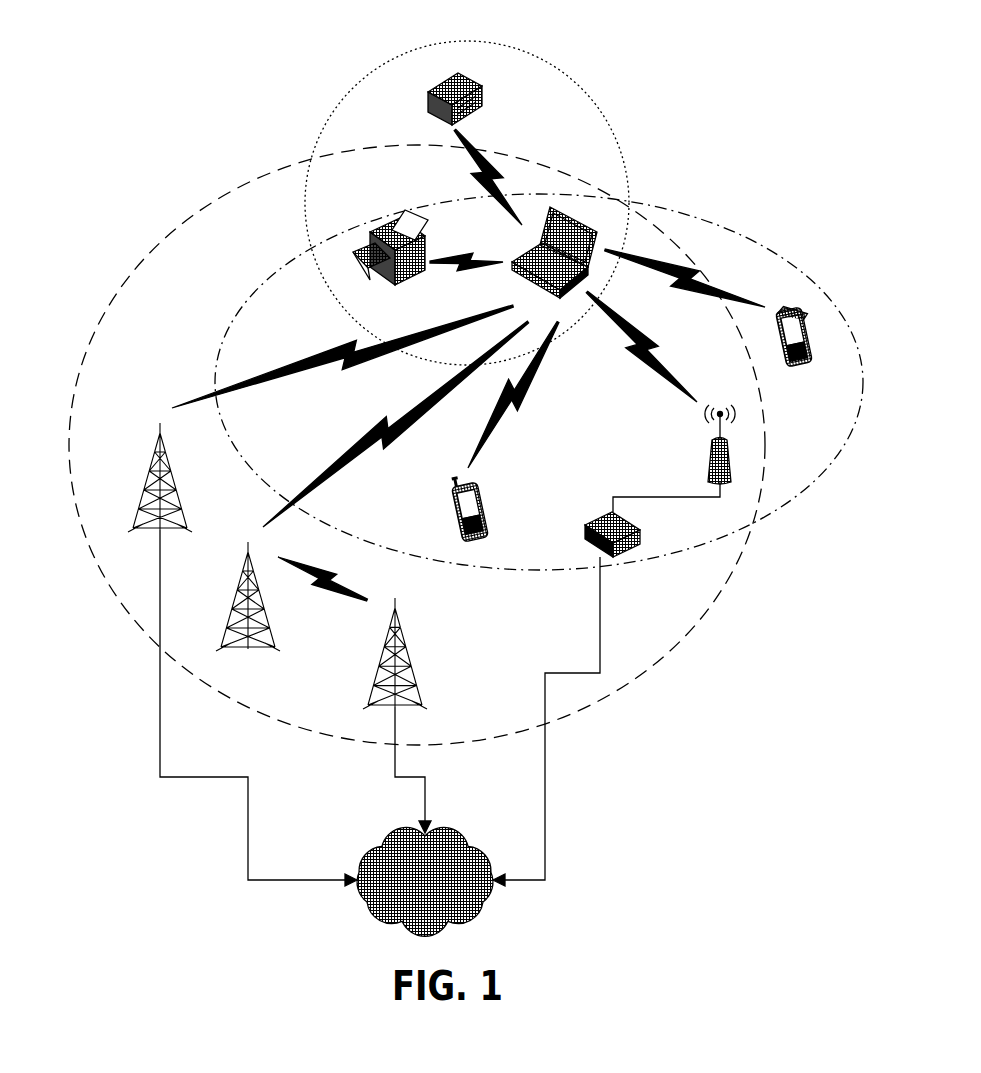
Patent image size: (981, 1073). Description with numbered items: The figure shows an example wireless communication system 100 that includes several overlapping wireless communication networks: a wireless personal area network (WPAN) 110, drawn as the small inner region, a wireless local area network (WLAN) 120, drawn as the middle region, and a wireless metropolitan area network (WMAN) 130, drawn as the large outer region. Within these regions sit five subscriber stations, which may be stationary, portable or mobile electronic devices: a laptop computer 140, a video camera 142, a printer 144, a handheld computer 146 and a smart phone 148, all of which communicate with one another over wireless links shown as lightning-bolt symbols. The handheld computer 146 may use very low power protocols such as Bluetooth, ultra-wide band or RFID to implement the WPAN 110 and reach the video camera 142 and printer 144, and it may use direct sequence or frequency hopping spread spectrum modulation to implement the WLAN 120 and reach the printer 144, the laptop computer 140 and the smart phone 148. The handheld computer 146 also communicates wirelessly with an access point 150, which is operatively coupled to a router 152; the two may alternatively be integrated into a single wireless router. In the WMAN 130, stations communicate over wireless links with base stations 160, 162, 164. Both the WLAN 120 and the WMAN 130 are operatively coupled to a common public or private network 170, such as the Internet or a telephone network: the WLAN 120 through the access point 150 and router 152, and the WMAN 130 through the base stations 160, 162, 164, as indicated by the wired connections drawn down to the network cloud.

The wireless communication system 100 is at (218, 82).
The wireless personal area network (WPAN) 110 is at (470, 42).
The wireless local area network (WLAN) 120 is at (205, 352).
The wireless metropolitan area network (WMAN) 130 is at (240, 185).
The laptop computer 140 is at (562, 208).
The video camera 142 is at (472, 95).
The printer 144 is at (400, 290).
The handheld computer 146 is at (787, 310).
The smart phone 148 is at (478, 497).
The access point (AP) 150 is at (712, 465).
The router 152 is at (595, 518).
The base station 160 is at (152, 465).
The base station 162 is at (242, 585).
The base station 164 is at (388, 645).
The common public or private network 170 is at (382, 848).